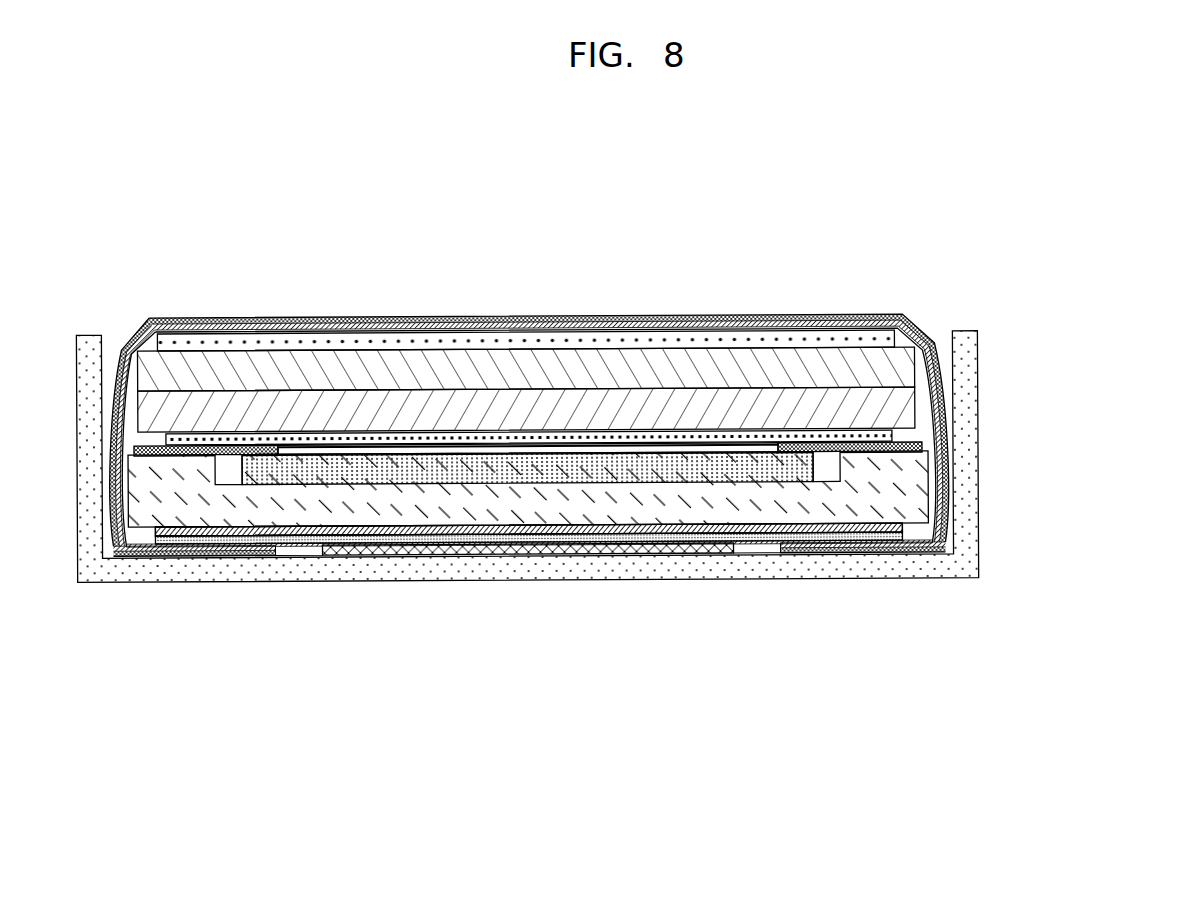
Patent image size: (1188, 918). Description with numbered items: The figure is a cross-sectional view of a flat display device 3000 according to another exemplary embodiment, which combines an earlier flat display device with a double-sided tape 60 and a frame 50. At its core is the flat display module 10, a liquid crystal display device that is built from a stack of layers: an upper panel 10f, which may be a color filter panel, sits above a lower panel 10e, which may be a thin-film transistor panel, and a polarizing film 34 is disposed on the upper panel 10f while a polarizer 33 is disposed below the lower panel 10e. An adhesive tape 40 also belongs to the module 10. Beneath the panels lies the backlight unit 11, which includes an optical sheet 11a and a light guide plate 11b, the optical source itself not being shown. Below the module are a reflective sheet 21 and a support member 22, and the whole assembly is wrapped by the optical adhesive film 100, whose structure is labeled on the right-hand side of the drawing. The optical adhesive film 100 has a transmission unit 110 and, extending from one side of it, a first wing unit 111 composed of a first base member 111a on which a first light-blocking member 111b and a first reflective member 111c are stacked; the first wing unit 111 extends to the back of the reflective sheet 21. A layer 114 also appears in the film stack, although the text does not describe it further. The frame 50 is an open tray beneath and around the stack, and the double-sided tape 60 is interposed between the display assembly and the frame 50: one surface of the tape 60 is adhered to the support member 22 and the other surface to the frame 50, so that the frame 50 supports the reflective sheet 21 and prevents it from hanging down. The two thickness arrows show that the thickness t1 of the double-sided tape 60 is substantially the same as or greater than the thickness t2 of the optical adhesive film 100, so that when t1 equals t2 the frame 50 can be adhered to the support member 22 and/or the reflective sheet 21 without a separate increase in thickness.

The flat display device 3000 is at (823, 243).
The flat display module 10 is at (528, 359).
The upper panel 10f is at (272, 365).
The lower panel 10e is at (315, 405).
The polarizing film 34 is at (404, 437).
The polarizer 33 is at (453, 439).
The adhesive tape 40 is at (790, 448).
The backlight unit 11 is at (528, 379).
The optical sheet 11a is at (550, 468).
The light guide plate 11b is at (528, 397).
The optical adhesive film 100 is at (641, 427).
The transmission unit 110 is at (850, 317).
The intermediate layer 114 is at (895, 341).
The first wing unit 111 is at (617, 439).
The first base member 111a is at (945, 435).
The first light-blocking member 111b is at (948, 452).
The first reflective member 111c is at (950, 470).
The frame 50 is at (963, 543).
The double-sided tape 60 is at (394, 555).
The reflective sheet 21 is at (252, 530).
The support member 22 is at (226, 540).
The thickness of the double-sided tape t1 is at (657, 535).
The thickness of the optical adhesive film t2 is at (815, 538).